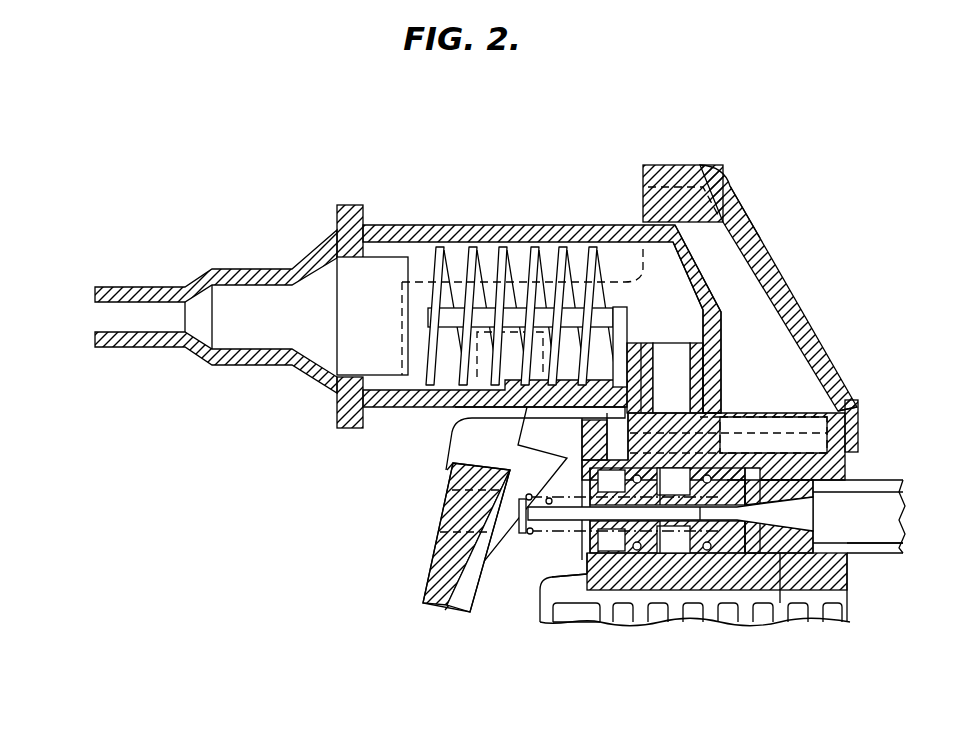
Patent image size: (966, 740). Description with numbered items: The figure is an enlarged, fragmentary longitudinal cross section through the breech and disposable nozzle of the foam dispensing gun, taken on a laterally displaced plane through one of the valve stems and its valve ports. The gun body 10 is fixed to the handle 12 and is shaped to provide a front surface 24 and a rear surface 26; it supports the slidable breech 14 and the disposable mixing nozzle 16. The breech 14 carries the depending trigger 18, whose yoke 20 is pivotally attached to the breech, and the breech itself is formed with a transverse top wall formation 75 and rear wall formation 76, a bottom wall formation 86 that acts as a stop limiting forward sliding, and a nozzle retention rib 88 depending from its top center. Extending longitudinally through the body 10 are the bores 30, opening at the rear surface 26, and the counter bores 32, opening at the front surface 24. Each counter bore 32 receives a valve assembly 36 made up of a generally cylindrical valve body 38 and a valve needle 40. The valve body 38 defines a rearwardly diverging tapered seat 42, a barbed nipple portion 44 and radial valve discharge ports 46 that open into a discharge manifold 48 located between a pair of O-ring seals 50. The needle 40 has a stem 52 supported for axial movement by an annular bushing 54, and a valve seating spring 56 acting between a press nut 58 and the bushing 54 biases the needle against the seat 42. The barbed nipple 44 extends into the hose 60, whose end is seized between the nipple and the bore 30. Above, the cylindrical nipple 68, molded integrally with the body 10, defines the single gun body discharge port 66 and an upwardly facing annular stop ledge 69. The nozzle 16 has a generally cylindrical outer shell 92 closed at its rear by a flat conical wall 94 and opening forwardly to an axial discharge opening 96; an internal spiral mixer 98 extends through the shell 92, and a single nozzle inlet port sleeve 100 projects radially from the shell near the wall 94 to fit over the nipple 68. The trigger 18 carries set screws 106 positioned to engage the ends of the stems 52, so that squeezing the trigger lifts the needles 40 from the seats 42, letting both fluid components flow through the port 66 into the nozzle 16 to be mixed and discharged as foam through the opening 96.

The gun body 10 is at (827, 413).
The handle 12 is at (817, 620).
The breech 14 is at (749, 219).
The mixing nozzle 16 is at (423, 226).
The trigger 18 is at (443, 617).
The yoke 20 is at (456, 420).
The front surface 24 is at (548, 576).
The rear surface 26 is at (852, 578).
The bores 30 is at (862, 546).
The counter bores 32 is at (592, 556).
The valve assembly 36 is at (562, 622).
The valve body 38 is at (745, 560).
The valve needle 40 is at (680, 514).
The tapered seat 42 is at (793, 513).
The barbed nipple portion 44 is at (781, 608).
The valve discharge ports 46 is at (773, 452).
The discharge manifold 48 is at (686, 557).
The O-ring seals 50 is at (640, 555).
The stem 52 is at (550, 499).
The annular bushing 54 is at (582, 477).
The valve seating spring 56 is at (523, 538).
The press nut 58 is at (468, 428).
The hose 60 is at (880, 486).
The gun body discharge port 66 is at (660, 384).
The cylindrical nipple 68 is at (660, 343).
The annular stop ledge 69 is at (714, 392).
The top wall formation 75 is at (675, 163).
The rear wall formation 76 is at (789, 300).
The bottom wall formation 86 is at (860, 438).
The nozzle retention rib 88 is at (643, 213).
The outer shell 92 is at (553, 225).
The conical wall 94 is at (697, 284).
The discharge opening 96 is at (94, 304).
The spiral mixer 98 is at (430, 318).
The nozzle inlet port sleeve 100 is at (633, 340).
The set screws 106 is at (453, 525).